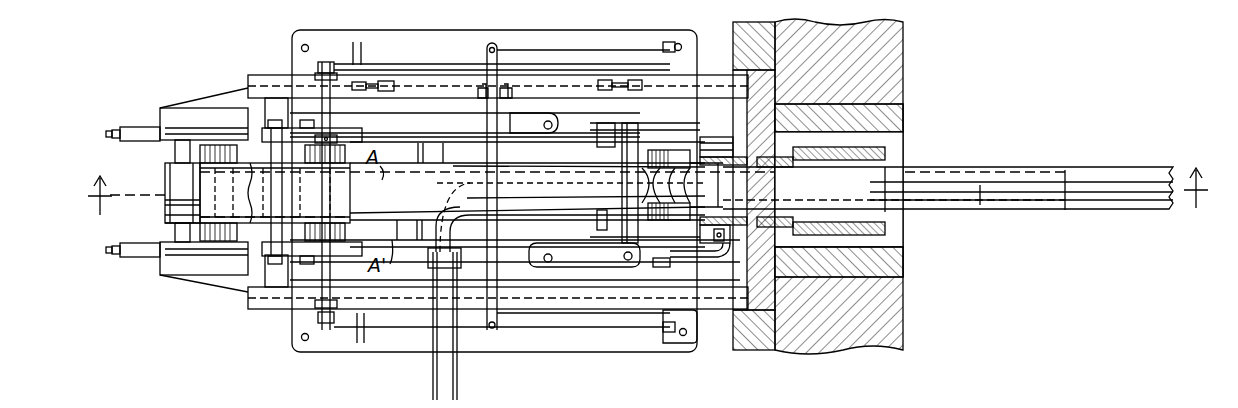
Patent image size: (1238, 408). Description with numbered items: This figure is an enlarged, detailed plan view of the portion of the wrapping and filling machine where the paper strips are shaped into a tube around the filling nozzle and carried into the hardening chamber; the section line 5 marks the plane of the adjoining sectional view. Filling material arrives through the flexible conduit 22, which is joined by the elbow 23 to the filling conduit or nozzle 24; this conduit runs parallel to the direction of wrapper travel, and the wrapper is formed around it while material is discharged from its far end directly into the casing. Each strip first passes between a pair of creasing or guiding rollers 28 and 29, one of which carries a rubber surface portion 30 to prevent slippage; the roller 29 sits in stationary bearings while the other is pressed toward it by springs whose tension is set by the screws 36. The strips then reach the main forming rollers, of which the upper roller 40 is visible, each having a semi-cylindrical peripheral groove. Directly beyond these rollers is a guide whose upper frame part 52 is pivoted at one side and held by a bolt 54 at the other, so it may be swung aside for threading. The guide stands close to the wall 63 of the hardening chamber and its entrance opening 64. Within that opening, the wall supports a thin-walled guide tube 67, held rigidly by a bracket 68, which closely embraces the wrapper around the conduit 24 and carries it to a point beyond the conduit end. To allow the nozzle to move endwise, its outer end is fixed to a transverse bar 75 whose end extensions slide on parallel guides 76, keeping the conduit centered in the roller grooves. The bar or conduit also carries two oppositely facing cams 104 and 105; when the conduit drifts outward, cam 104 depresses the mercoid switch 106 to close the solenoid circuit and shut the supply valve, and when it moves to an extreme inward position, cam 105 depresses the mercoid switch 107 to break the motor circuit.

The section line 5 is at (644, 191).
The flexible conduit 22 is at (458, 375).
The elbow 23 is at (455, 238).
The filling conduit or nozzle 24 is at (768, 178).
The creasing or guiding roller 28 is at (168, 219).
The creasing or guiding roller 29 is at (166, 172).
The rubber surface portion 30 is at (167, 202).
The adjusting screws 36 is at (123, 128).
The main forming roller 40 is at (675, 153).
The upper frame part 52 is at (736, 142).
The bolt 54 is at (727, 248).
The hardening chamber wall 63 is at (900, 57).
The entrance opening 64 is at (896, 150).
The guide tube 67 is at (857, 254).
The bracket 68 is at (866, 222).
The transverse bar 75 is at (486, 47).
The parallel guides 76 is at (396, 69).
The cam 104 is at (478, 96).
The cam 105 is at (512, 96).
The mercoid switch 106 is at (352, 92).
The mercoid switch 107 is at (635, 91).